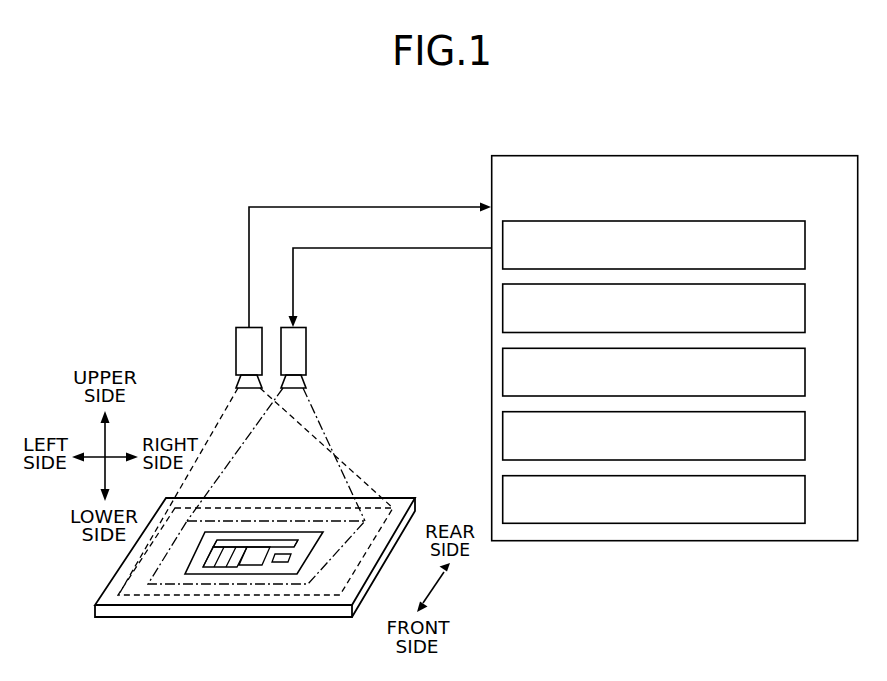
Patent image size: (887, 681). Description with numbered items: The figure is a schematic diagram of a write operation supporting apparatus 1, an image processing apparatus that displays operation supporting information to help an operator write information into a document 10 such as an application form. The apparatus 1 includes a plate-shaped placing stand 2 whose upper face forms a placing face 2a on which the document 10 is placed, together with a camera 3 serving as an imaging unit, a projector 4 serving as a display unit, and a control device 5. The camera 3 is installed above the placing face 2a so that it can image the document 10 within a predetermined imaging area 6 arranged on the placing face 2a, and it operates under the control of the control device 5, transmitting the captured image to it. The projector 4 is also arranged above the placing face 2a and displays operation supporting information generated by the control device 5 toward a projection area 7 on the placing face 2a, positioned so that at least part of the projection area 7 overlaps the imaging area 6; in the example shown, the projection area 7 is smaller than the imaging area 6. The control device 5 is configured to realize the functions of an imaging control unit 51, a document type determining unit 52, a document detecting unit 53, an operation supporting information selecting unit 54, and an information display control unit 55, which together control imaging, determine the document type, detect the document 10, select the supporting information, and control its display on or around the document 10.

The write operation supporting apparatus 1 is at (189, 251).
The placing stand 2 is at (382, 558).
The placing face 2a is at (404, 496).
The camera 3 is at (236, 350).
The projector 4 is at (290, 326).
The control device 5 is at (743, 155).
The imaging area 6 is at (123, 617).
The projection area 7 is at (301, 605).
The document 10 is at (212, 575).
The imaging control unit 51 is at (806, 247).
The document type determining unit 52 is at (806, 313).
The document detecting unit 53 is at (806, 377).
The operation supporting information selecting unit 54 is at (806, 440).
The information display control unit 55 is at (806, 500).